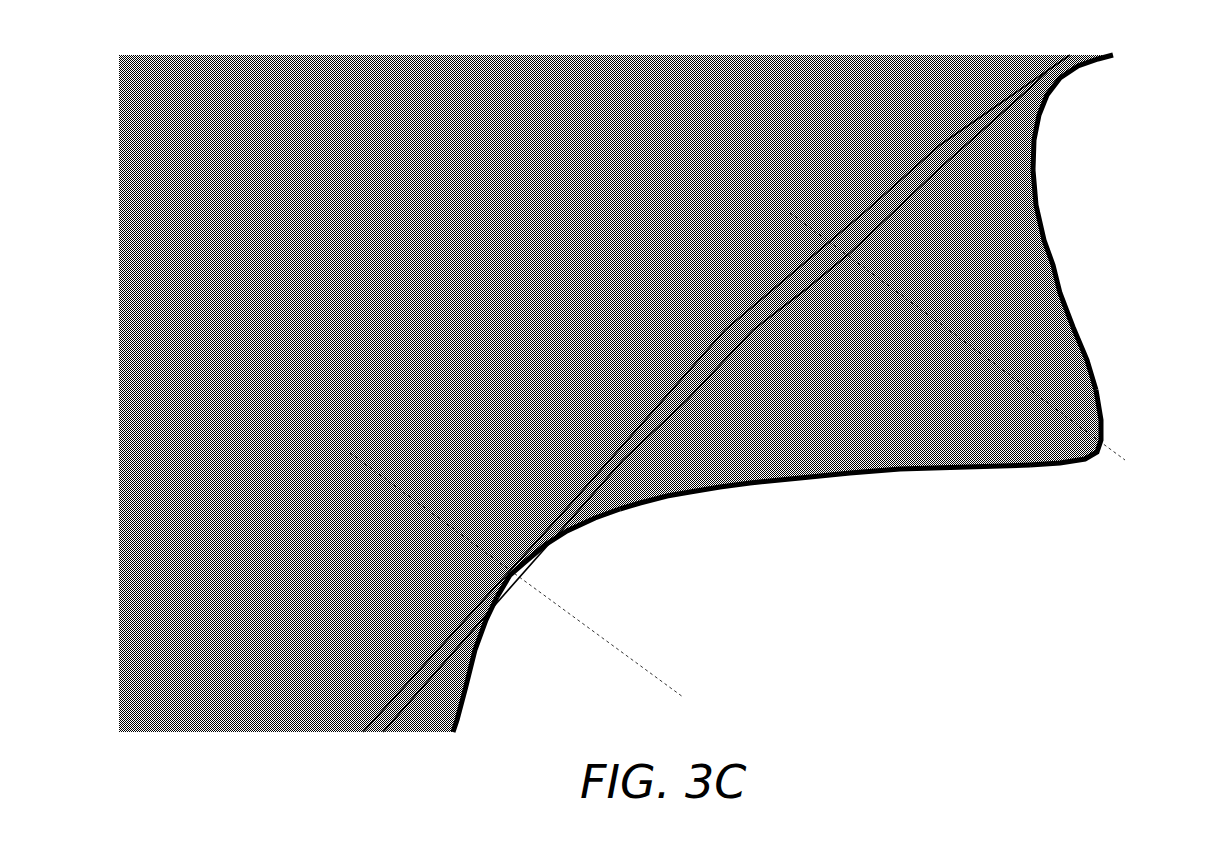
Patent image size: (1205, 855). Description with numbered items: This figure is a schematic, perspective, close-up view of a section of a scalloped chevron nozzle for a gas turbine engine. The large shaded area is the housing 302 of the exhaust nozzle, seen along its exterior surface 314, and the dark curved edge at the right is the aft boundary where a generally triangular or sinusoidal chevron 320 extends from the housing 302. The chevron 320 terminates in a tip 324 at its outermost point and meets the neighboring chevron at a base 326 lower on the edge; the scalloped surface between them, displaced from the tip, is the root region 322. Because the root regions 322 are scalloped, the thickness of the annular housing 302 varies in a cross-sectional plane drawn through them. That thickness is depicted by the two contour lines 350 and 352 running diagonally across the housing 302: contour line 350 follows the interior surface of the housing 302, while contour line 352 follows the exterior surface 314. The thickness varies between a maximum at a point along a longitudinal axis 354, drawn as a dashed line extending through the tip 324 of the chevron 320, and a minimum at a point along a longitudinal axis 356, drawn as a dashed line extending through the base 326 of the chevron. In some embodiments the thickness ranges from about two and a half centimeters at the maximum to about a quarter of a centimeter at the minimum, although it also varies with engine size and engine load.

The housing 302 is at (232, 157).
The exterior surface 314 is at (713, 103).
The chevron 320 is at (1048, 347).
The root region 322 is at (483, 540).
The tip 324 is at (1094, 436).
The base 326 is at (518, 572).
The contour line 350 is at (882, 227).
The contour line 352 is at (863, 208).
The longitudinal axis 354 is at (945, 332).
The longitudinal axis 356 is at (349, 452).